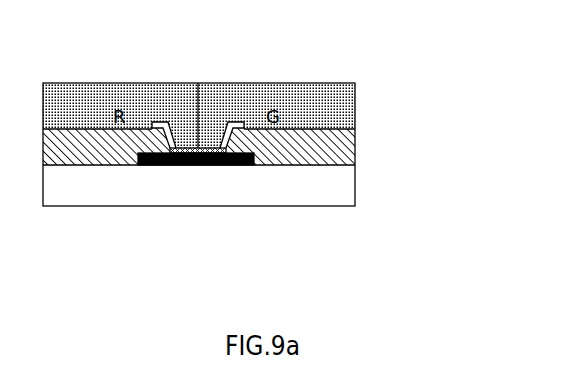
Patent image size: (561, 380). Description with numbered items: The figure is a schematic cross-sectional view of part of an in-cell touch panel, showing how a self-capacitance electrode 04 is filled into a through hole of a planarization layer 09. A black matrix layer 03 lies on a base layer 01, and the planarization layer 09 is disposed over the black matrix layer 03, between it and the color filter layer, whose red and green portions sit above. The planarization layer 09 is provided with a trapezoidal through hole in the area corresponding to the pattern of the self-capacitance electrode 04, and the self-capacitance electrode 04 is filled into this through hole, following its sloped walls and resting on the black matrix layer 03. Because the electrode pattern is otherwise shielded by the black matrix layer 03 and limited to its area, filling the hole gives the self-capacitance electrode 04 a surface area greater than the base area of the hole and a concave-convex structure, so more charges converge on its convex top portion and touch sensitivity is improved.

The substrate 01 is at (323, 197).
The black matrix layer 03 is at (198, 166).
The self-capacitance electrode 04 is at (223, 122).
The planarization layer 09 is at (350, 144).